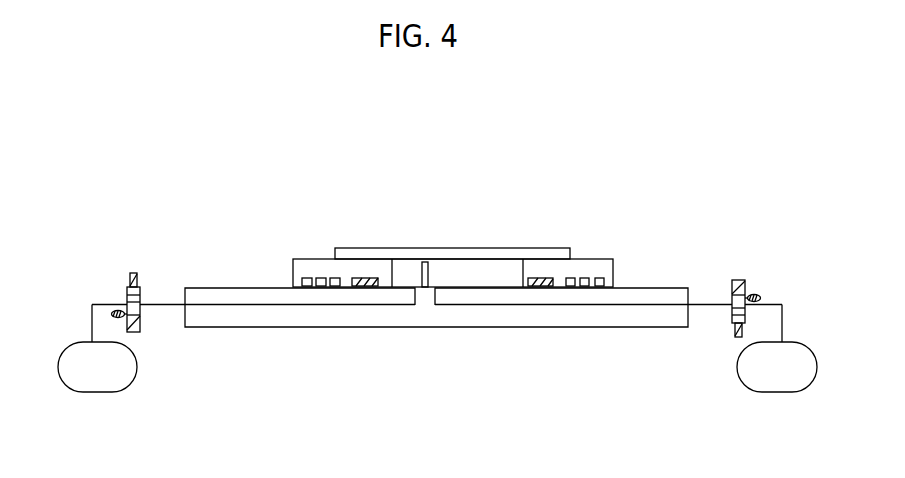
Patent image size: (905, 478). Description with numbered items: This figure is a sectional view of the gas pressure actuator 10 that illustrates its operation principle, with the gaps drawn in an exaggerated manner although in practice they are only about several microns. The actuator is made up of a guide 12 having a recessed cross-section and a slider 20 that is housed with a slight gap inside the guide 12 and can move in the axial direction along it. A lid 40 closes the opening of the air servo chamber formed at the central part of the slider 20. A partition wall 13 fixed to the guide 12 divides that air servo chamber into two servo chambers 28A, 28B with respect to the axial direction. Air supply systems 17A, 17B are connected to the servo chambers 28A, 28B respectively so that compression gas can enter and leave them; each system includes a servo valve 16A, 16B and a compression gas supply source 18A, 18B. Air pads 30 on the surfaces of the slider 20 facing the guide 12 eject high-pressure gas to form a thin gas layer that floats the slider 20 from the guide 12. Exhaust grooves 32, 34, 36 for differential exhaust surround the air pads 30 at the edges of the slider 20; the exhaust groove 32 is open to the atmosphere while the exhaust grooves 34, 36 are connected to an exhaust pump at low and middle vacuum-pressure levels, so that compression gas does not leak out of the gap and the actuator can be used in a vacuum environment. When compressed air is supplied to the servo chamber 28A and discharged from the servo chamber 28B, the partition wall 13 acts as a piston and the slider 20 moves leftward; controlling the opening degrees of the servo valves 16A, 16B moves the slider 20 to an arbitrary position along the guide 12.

The gas pressure actuator 10 is at (538, 158).
The guide 12 is at (660, 296).
The partition wall 13 is at (424, 262).
The servo valve 16A is at (135, 332).
The servo valve 16B is at (746, 283).
The air supply system 17A is at (38, 267).
The air supply system 17B is at (713, 267).
The compression gas supply source 18A is at (98, 378).
The compression gas supply source 18B is at (779, 378).
The slider 20 is at (348, 268).
The servo chamber 28A is at (402, 290).
The servo chamber 28B is at (487, 290).
The air pad 30 is at (366, 278).
The exhaust groove 32 is at (333, 278).
The exhaust groove 34 is at (319, 278).
The exhaust groove 36 is at (306, 278).
The lid 40 is at (448, 254).